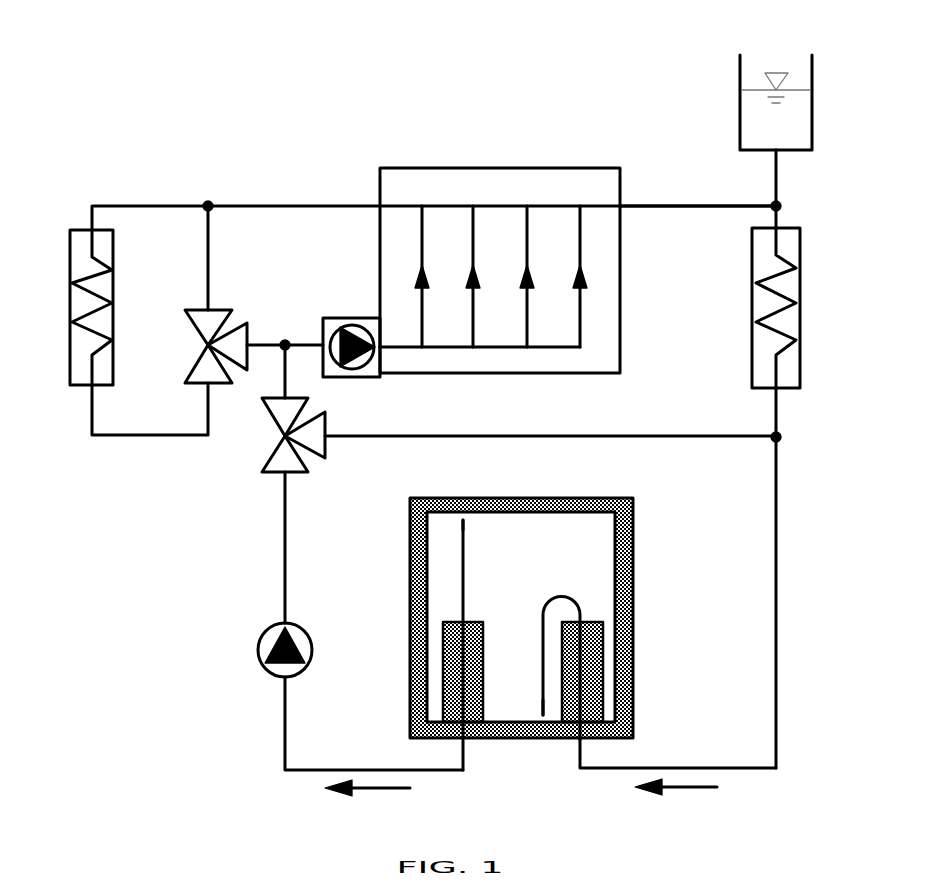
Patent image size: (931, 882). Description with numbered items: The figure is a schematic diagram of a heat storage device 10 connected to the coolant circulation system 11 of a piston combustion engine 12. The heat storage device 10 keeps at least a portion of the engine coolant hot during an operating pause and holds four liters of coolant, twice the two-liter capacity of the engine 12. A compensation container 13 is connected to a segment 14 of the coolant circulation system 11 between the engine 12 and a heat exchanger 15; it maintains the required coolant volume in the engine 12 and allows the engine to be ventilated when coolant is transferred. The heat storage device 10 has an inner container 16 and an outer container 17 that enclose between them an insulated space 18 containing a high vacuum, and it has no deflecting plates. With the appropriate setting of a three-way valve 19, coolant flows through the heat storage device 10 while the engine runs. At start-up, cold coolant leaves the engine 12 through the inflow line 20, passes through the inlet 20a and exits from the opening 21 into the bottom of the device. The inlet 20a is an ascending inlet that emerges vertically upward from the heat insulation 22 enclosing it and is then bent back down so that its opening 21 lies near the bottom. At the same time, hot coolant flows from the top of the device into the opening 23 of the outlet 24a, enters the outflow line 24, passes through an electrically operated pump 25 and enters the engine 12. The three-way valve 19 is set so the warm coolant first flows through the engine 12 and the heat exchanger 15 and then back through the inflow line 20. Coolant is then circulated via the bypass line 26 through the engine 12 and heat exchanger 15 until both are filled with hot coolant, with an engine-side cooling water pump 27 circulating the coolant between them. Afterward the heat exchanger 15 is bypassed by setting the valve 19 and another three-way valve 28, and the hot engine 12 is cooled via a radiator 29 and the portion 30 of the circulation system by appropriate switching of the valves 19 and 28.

The heat storage device 10 is at (662, 520).
The coolant circulation system 11 is at (240, 92).
The piston combustion engine 12 is at (577, 167).
The compensation container 13 is at (814, 110).
The segment 14 is at (683, 205).
The heat exchanger 15 is at (802, 282).
The inner container 16 is at (605, 561).
The outer container 17 is at (642, 560).
The insulated space 18 is at (623, 497).
The three-way valve 19 is at (262, 462).
The inflow line 20 is at (654, 767).
The inlet 20a is at (552, 597).
The opening 21 is at (530, 705).
The heat insulation 22 is at (589, 622).
The opening 23 is at (478, 523).
The outflow line 24 is at (344, 769).
The outlet 24a is at (466, 600).
The electrically operated pump 25 is at (313, 648).
The bypass line 26 is at (553, 435).
The engine-side cooling water pump 27 is at (340, 318).
The three-way valve 28 is at (186, 370).
The radiator 29 is at (66, 269).
The portion 30 is at (318, 205).